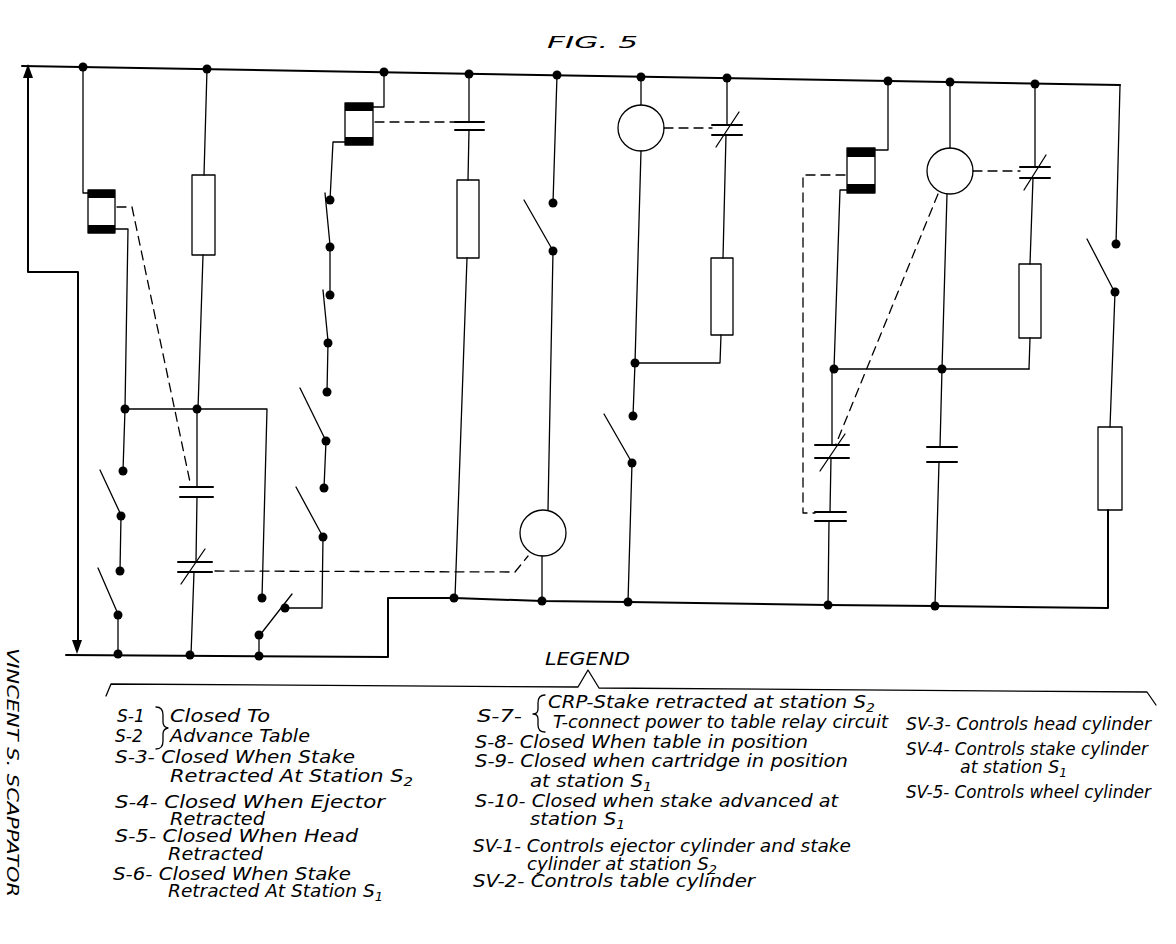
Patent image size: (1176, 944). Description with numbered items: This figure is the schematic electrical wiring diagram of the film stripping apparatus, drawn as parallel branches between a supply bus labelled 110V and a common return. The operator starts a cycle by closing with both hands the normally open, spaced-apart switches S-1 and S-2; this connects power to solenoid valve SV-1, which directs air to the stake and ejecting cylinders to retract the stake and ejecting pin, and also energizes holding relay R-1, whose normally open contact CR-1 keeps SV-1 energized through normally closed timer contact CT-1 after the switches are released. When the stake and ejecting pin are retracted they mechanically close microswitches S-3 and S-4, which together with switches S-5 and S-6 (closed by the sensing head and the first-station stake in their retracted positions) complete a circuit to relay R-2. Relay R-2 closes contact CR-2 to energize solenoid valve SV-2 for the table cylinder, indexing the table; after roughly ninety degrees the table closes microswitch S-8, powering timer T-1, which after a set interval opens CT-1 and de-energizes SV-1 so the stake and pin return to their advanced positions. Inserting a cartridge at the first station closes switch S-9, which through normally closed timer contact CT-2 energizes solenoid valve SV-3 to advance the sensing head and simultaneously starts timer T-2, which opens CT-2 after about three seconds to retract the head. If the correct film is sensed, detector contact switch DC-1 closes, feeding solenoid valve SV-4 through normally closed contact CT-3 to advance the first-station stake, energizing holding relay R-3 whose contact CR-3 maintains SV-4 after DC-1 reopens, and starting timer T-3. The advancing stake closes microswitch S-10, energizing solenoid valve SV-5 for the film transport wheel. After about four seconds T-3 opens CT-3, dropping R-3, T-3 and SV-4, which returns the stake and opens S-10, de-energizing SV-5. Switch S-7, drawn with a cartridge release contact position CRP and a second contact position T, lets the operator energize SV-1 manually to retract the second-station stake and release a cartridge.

The 110 volt power supply 110V is at (61, 359).
The holding relay R-1 is at (135, 273).
The relay R-2 is at (392, 134).
The holding relay R-3 is at (848, 295).
The solenoid valve SV-1 is at (220, 237).
The solenoid valve SV-2 is at (479, 381).
The solenoid operated air valve SV-3 is at (698, 310).
The solenoid valve SV-4 is at (1045, 316).
The solenoid valve SV-5 is at (1124, 458).
The relay switch contact CR-1 is at (210, 485).
The relay contact CR-2 is at (483, 125).
The relay contact CR-3 is at (845, 549).
The timer contact CT-1 is at (353, 602).
The timer contact CT-2 is at (745, 166).
The timer contact switch CT-3 is at (948, 296).
The timer T-1 is at (543, 558).
The timer T-2 is at (665, 220).
The timer T-3 is at (973, 224).
The detector contact switch DC-1 is at (959, 490).
The cartridge release contact position CRP is at (258, 599).
The switch S-7 contact T (connect power to table relay circuit) T is at (292, 579).
The switch S-1 is at (122, 587).
The switch S-2 is at (124, 465).
The microswitch S-3 is at (322, 513).
The microswitch S-4 is at (326, 438).
The switch S-5 is at (303, 341).
The switch S-6 is at (308, 244).
The switch S-7 is at (289, 599).
The microswitch S-8 is at (551, 291).
The switch S-9 is at (628, 485).
The microswitch S-10 is at (1115, 256).